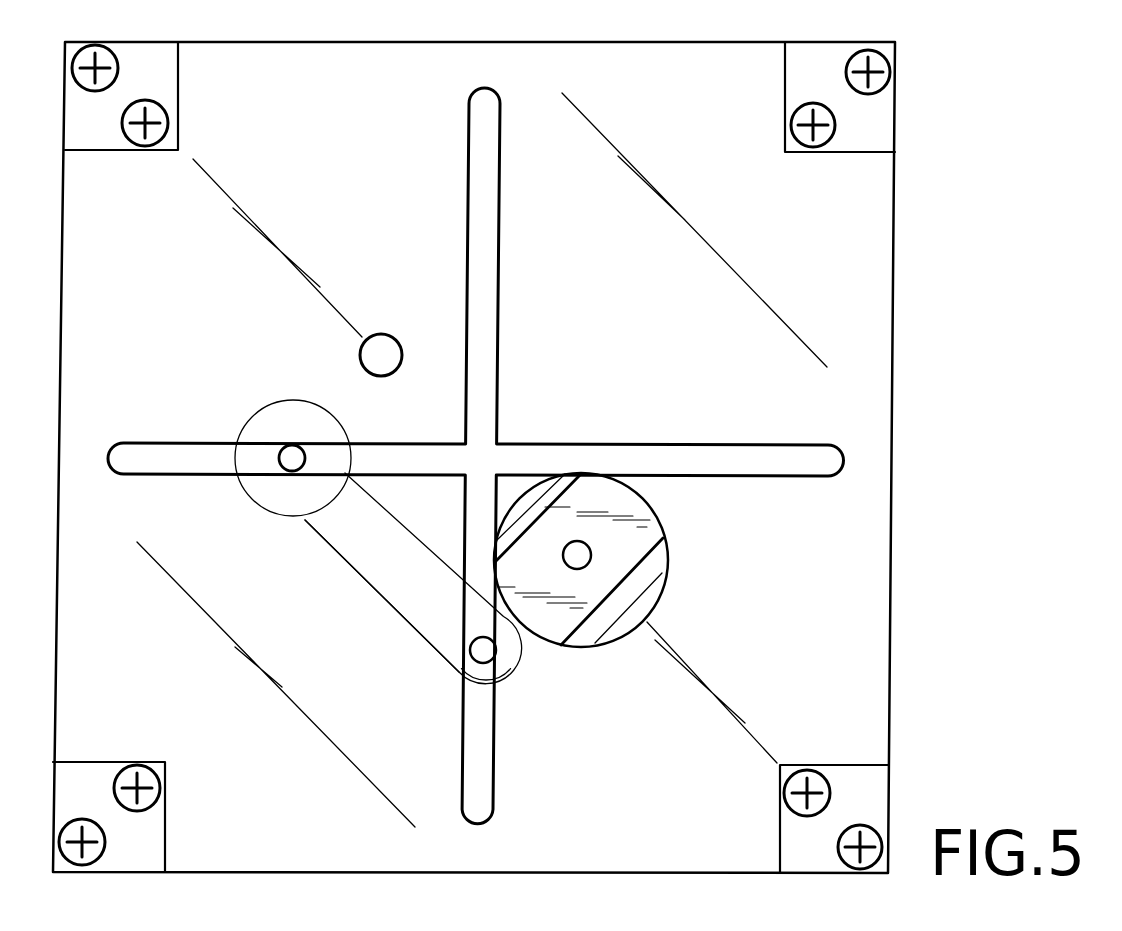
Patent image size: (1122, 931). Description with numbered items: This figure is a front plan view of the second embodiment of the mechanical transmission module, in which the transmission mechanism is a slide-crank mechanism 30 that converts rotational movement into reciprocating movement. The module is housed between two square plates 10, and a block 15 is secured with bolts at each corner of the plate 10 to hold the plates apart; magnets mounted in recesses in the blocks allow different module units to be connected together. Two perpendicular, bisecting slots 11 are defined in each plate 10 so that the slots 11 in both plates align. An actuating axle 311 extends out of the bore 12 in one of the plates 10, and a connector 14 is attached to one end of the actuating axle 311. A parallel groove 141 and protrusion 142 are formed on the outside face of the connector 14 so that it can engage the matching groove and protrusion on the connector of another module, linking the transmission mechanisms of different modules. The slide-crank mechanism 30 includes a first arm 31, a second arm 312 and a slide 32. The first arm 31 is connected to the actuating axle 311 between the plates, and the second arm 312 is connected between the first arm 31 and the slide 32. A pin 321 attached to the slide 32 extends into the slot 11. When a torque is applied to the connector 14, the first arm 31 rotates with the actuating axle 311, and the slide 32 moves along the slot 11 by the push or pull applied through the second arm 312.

The plate 10 is at (877, 305).
The slot 11 is at (831, 465).
The bore 12 is at (398, 338).
The connector 14 is at (558, 623).
The groove 141 is at (640, 588).
The protrusion 142 is at (543, 507).
The block 15 is at (883, 132).
The slide-crank mechanism 30 is at (382, 620).
The first arm 31 is at (520, 645).
The actuating axle 311 is at (578, 558).
The second arm 312 is at (370, 558).
The slide 32 is at (275, 498).
The pin 321 is at (291, 450).